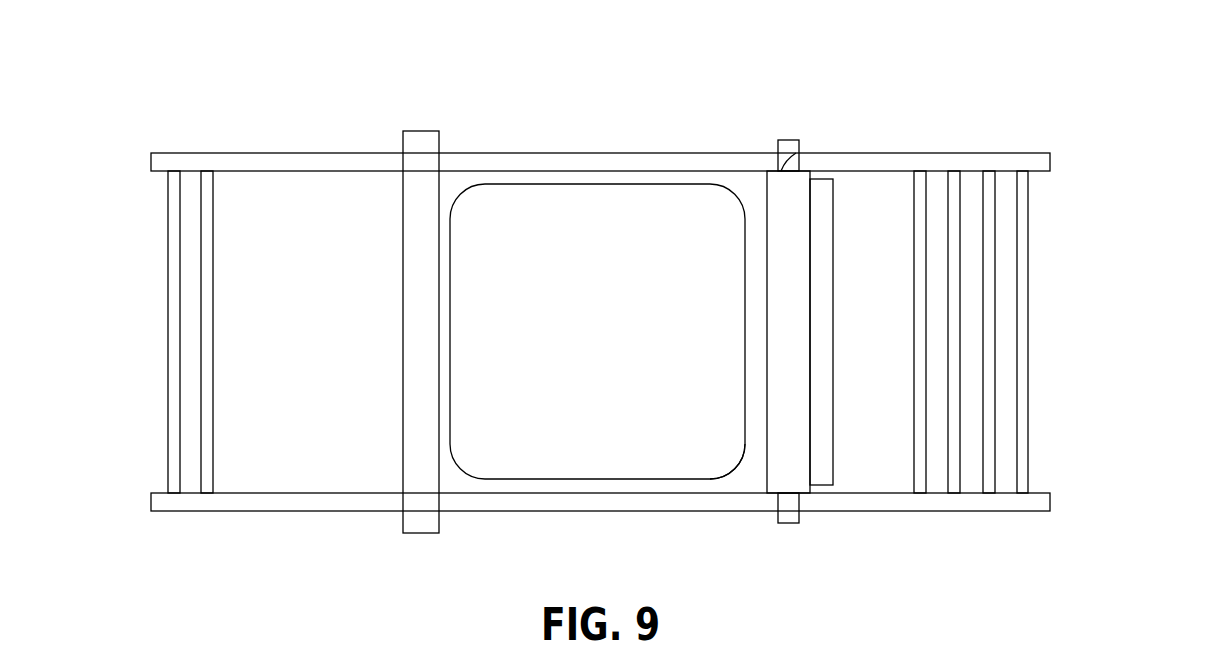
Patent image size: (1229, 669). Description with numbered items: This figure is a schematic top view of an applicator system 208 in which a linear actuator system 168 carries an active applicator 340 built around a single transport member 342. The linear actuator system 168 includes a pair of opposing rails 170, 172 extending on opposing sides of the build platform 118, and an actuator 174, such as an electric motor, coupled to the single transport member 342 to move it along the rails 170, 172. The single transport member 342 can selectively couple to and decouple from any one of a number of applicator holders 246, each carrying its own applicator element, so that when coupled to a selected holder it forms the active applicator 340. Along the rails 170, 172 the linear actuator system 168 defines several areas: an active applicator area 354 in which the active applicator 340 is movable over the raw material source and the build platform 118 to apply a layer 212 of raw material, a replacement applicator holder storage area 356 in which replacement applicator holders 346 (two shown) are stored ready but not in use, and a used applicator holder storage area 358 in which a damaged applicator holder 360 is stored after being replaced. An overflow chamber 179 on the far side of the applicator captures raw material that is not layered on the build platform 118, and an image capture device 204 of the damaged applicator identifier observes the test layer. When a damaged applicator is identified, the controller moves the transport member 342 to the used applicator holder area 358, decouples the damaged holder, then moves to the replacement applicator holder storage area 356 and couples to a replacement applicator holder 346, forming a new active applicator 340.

The applicator system 208 is at (1064, 107).
The linear actuator system 168 is at (1073, 161).
The rail 170 is at (500, 160).
The rail 172 is at (361, 497).
The applicator holder 246 is at (682, 287).
The used applicator holder storage area 358 is at (348, 133).
The damaged applicator holder 360 is at (232, 222).
The replacement applicator holder storage area 356 is at (1020, 129).
The replacement applicator holder 346 is at (982, 262).
The active applicator area 354 is at (792, 57).
The overflow chamber 179 is at (423, 138).
The layer of raw material 212 is at (530, 443).
The build platform 118 is at (737, 477).
The actuator 174 is at (797, 140).
The active applicator 340 is at (788, 167).
The image capture device 204 is at (827, 362).
The single transport member 342 is at (786, 228).